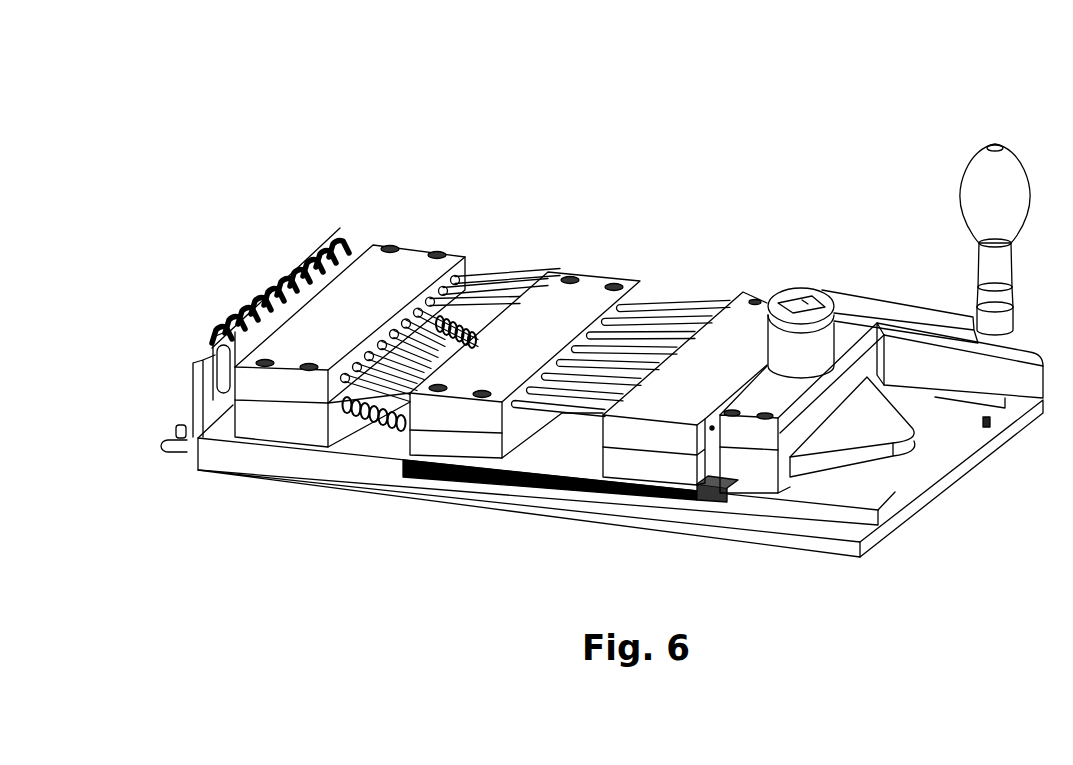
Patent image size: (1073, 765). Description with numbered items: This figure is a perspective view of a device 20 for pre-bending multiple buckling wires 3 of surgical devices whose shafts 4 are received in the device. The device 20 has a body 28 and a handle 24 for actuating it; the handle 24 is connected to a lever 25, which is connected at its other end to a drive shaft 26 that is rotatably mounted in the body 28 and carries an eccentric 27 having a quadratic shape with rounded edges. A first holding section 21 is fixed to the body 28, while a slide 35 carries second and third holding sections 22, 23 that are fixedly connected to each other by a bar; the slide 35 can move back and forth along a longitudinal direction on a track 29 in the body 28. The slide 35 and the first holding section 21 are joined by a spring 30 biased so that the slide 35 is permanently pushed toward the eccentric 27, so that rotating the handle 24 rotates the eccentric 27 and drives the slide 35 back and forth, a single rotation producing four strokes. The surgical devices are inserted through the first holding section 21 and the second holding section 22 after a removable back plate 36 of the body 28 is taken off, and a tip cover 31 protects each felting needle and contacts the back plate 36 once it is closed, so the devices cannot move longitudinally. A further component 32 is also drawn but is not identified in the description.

The device 20 is at (230, 156).
The buckling wires 3 is at (490, 277).
The shaft 4 is at (668, 306).
The first holding section 21 is at (413, 250).
The second holding section 22 is at (597, 272).
The third holding section 23 is at (742, 293).
The handle 24 is at (998, 143).
The lever 25 is at (857, 293).
The drive shaft 26 is at (803, 298).
The eccentric 27 is at (923, 442).
The body 28 is at (905, 500).
The track 29 is at (532, 493).
The spring 30 is at (377, 425).
The tip cover 31 is at (333, 250).
The slider block 32 is at (327, 405).
The slide 35 is at (588, 473).
The removable back plate 36 is at (198, 412).